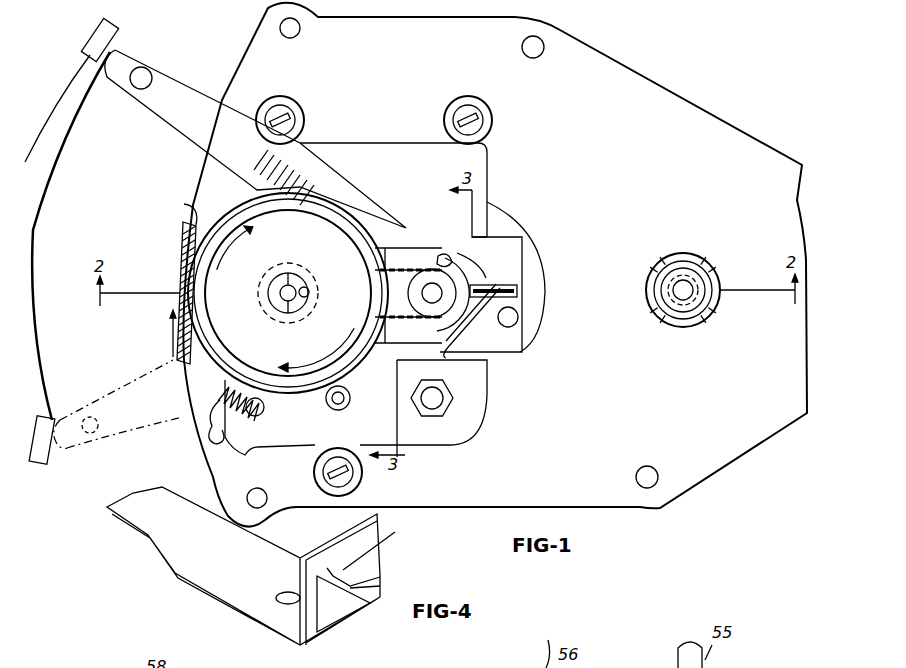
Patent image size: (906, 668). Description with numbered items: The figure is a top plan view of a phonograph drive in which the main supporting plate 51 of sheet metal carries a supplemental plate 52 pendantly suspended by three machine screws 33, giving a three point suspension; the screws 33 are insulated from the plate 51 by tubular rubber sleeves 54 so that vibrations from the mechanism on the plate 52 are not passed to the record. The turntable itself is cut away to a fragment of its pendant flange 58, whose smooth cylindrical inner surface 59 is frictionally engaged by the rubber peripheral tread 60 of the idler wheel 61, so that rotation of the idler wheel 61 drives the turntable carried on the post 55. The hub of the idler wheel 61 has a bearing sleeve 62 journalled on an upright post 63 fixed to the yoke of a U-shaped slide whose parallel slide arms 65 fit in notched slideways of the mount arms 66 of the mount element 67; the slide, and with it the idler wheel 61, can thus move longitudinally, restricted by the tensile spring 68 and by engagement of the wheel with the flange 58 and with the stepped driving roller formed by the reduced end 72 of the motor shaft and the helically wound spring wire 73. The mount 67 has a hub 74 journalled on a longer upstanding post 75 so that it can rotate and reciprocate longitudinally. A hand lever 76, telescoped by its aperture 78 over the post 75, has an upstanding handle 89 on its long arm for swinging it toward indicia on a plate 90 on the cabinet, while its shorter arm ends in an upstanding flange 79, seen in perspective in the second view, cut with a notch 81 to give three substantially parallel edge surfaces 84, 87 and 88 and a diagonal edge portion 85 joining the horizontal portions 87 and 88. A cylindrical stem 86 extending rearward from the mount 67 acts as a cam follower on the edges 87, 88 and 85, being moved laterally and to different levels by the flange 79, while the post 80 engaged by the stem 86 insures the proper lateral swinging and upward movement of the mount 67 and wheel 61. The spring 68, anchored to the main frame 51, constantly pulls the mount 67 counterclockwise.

In FIG. 1, the machine screws 33 is at (448, 108).
In FIG. 1, the main supporting plate 51 is at (655, 85).
In FIG. 1, the supplemental plate 52 is at (475, 165).
In FIG. 1, the tubular rubber sleeves 54 is at (448, 120).
In FIG. 1, the post 55 is at (684, 282).
In FIG. 1, the pendant flange 58 is at (180, 266).
In FIG. 1, the cylindrical inner surface 59 is at (184, 204).
In FIG. 4, the cylindrical inner surface 59 is at (232, 656).
In FIG. 1, the rubber peripheral tread 60 is at (338, 243).
In FIG. 1, the idler wheel 61 is at (384, 208).
In FIG. 1, the bearing sleeve 62 is at (300, 315).
In FIG. 1, the upright post 63 is at (310, 296).
In FIG. 1, the slide arms 65 is at (386, 356).
In FIG. 1, the mount arms 66 is at (477, 285).
In FIG. 1, the mount element 67 is at (442, 254).
In FIG. 1, the tensile spring 68 is at (218, 402).
In FIG. 1, the reduced end 72 is at (351, 400).
In FIG. 1, the helically wound spring wire 73 is at (352, 406).
In FIG. 1, the hub 74 is at (442, 278).
In FIG. 1, the upstanding post 75 is at (444, 354).
In FIG. 1, the hand lever 76 is at (183, 82).
In FIG. 4, the hand lever 76 is at (187, 563).
In FIG. 4, the aperture 78 is at (276, 599).
In FIG. 1, the upstanding flange 79 is at (500, 358).
In FIG. 4, the upstanding flange 79 is at (338, 548).
In FIG. 1, the post 80 is at (517, 322).
In FIG. 4, the notch 81 is at (352, 588).
In FIG. 4, the edge surface 84 is at (342, 625).
In FIG. 4, the diagonal edge portion 85 is at (379, 546).
In FIG. 1, the stem 86 is at (516, 286).
In FIG. 4, the edge surface 87 is at (302, 572).
In FIG. 4, the edge surface 88 is at (382, 580).
In FIG. 1, the upstanding handle 89 is at (147, 70).
In FIG. 1, the plate 90 is at (70, 74).